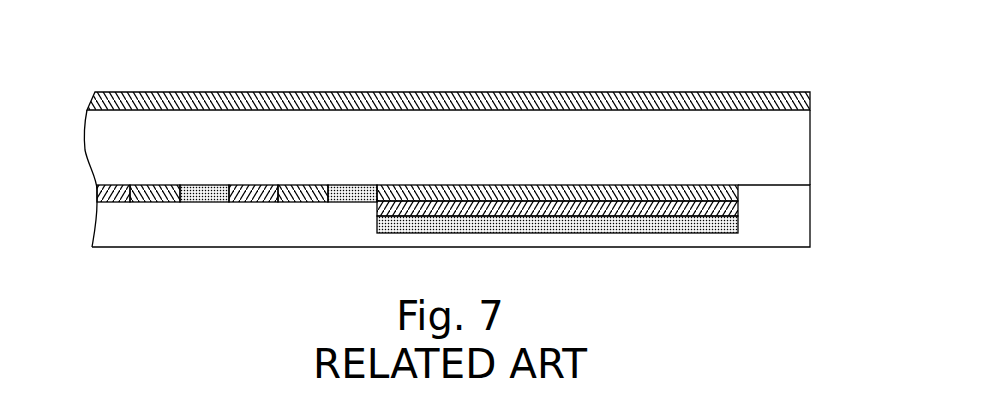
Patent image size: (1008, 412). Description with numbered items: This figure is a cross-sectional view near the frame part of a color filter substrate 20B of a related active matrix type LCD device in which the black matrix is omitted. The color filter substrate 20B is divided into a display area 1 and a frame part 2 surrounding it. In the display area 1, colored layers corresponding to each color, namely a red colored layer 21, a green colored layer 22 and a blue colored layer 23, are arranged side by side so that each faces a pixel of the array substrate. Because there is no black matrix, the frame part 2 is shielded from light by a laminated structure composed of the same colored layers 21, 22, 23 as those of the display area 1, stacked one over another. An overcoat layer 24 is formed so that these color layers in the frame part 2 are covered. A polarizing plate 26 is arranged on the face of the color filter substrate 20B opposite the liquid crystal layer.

The display area 1 is at (373, 63).
The frame part 2 is at (738, 63).
The color filter substrate 20B is at (788, 148).
The red (R) colored layer 21 is at (257, 198).
The green (G) colored layer 22 is at (310, 198).
The blue (B) colored layer 23 is at (206, 198).
The overcoat layer 24 is at (790, 215).
The polarizing plate 26 is at (782, 100).